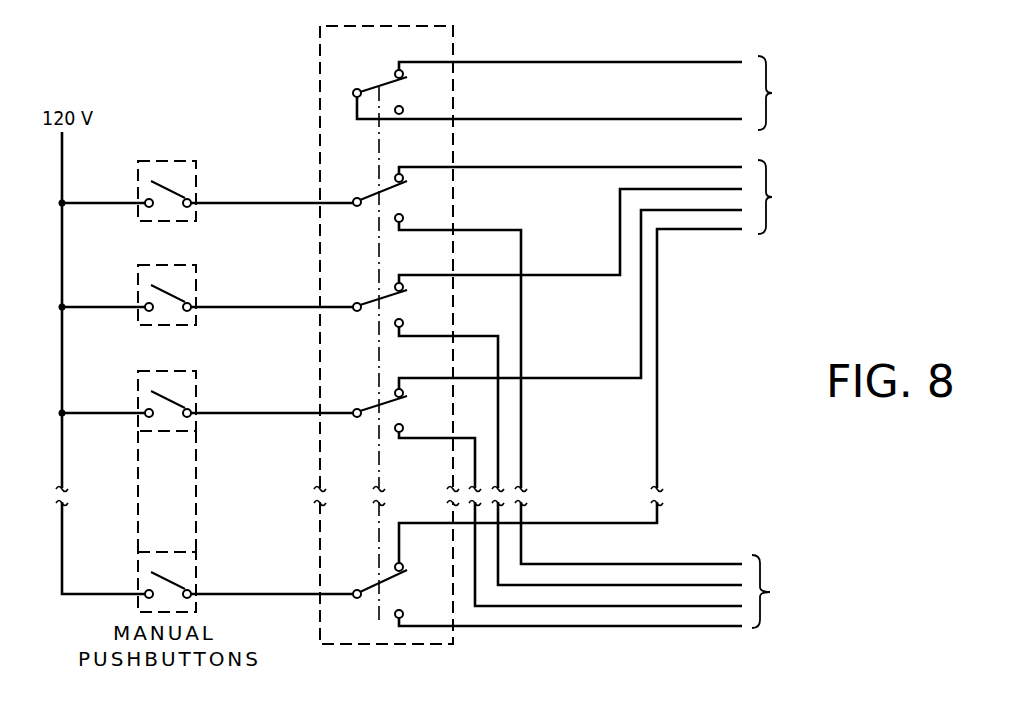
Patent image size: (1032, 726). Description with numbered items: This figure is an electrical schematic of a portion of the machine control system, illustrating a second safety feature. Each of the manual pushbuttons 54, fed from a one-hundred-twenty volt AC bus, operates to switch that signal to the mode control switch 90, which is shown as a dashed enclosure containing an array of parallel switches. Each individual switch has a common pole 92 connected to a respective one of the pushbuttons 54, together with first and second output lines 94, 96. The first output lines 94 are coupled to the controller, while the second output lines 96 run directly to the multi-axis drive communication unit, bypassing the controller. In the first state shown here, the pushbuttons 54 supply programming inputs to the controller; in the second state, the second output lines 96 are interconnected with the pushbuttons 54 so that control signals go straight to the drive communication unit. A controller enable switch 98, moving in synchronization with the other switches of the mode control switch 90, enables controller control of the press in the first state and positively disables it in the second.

The pushbutton 54 is at (197, 176).
The mode control switch 90 is at (319, 138).
The common pole 92 is at (357, 197).
The first output lines 94 is at (712, 246).
The second output lines 96 is at (713, 550).
The controller enable switch 98 is at (357, 88).